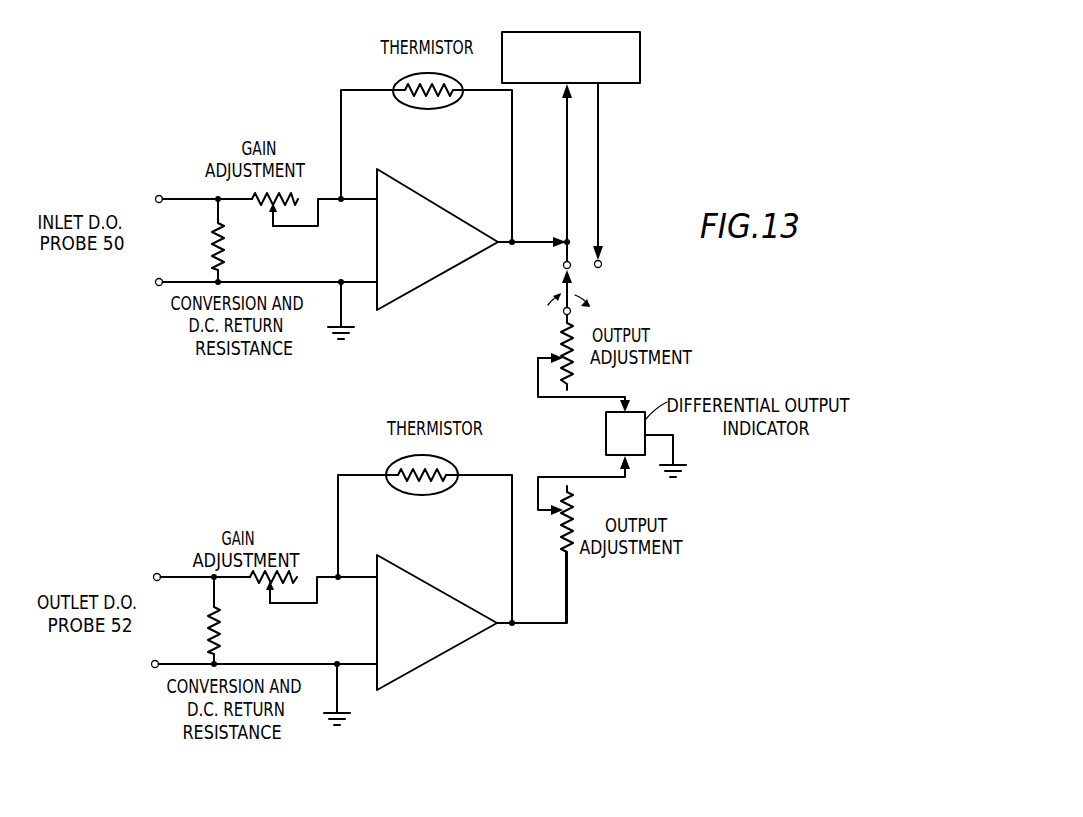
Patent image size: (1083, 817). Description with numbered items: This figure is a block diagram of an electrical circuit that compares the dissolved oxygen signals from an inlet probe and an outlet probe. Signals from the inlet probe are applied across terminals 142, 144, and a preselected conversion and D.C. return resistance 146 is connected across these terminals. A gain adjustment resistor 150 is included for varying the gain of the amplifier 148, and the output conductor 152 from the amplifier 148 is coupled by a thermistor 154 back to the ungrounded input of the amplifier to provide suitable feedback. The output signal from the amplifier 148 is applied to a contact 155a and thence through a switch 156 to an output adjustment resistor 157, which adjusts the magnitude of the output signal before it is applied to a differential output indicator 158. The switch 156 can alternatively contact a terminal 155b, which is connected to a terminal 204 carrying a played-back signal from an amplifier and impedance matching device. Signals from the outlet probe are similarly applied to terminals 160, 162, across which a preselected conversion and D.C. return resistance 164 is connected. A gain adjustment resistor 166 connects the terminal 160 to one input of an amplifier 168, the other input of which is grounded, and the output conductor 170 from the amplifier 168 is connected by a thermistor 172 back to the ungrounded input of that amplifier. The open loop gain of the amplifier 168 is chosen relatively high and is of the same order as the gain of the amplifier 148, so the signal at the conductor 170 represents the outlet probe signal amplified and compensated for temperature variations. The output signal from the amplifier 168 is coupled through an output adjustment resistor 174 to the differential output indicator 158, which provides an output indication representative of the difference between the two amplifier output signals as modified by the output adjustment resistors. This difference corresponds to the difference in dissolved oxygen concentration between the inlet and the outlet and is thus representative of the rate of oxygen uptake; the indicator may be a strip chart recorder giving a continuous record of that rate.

The terminal 142 is at (160, 195).
The terminal 144 is at (155, 285).
The conversion and D.C. return resistance 146 is at (224, 247).
The amplifier 148 is at (459, 214).
The gain adjustment resistor 150 is at (297, 196).
The output conductor 152 is at (553, 216).
The thermistor 154 is at (449, 108).
The contact 155a is at (564, 266).
The terminal 155b is at (601, 258).
The switch 156 is at (572, 291).
The output adjustment resistor 157 is at (563, 333).
The differential output indicator 158 is at (606, 440).
The terminal 160 is at (159, 573).
The terminal 162 is at (156, 660).
The conversion and D.C. return resistance 164 is at (222, 632).
The gain adjustment resistor 166 is at (259, 589).
The amplifier 168 is at (458, 600).
The output conductor 170 is at (542, 628).
The thermistor 172 is at (393, 462).
The output adjustment resistor 174 is at (563, 539).
The terminal 204 is at (600, 87).